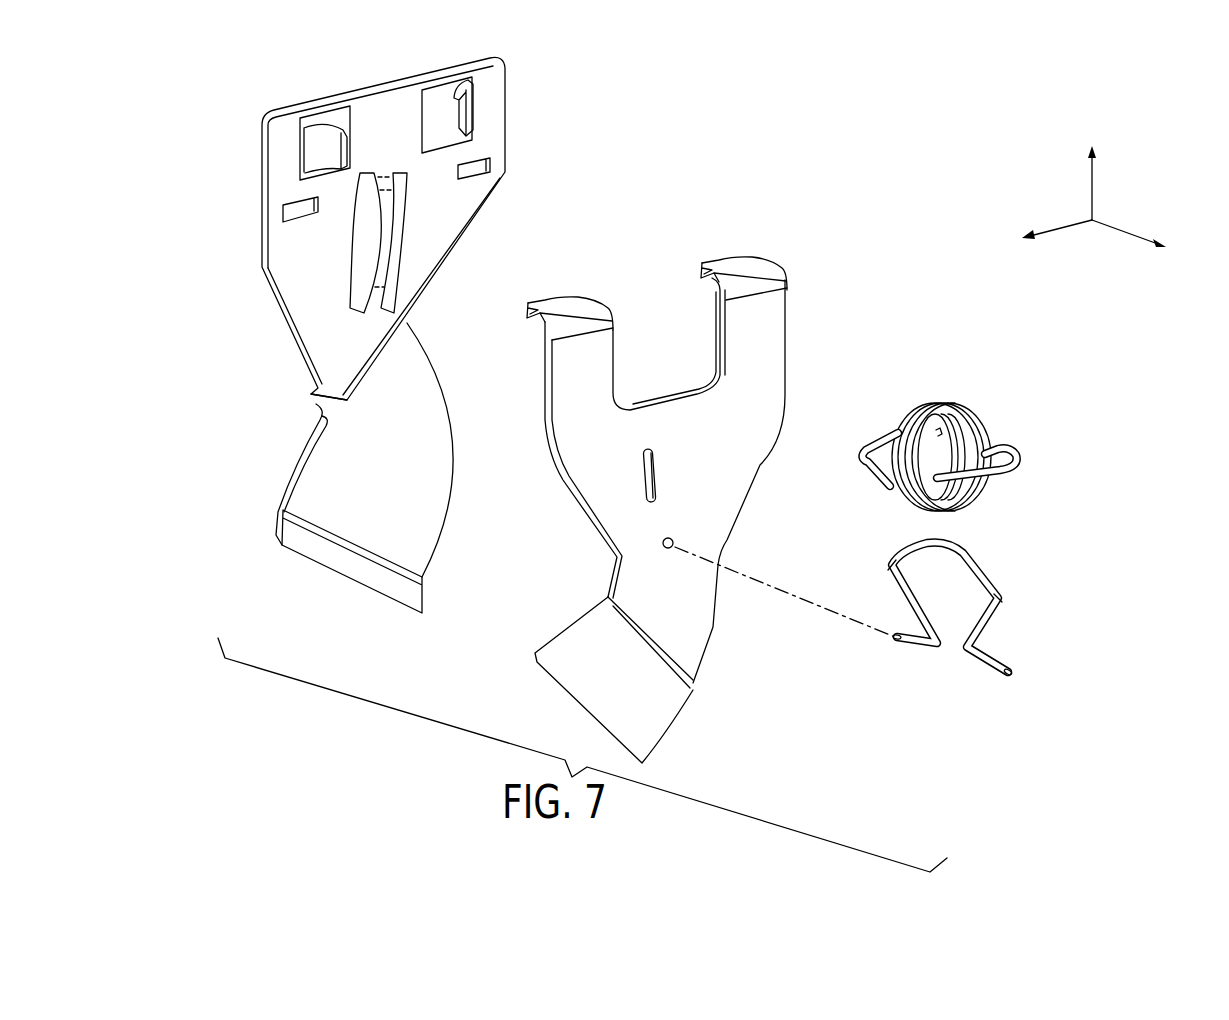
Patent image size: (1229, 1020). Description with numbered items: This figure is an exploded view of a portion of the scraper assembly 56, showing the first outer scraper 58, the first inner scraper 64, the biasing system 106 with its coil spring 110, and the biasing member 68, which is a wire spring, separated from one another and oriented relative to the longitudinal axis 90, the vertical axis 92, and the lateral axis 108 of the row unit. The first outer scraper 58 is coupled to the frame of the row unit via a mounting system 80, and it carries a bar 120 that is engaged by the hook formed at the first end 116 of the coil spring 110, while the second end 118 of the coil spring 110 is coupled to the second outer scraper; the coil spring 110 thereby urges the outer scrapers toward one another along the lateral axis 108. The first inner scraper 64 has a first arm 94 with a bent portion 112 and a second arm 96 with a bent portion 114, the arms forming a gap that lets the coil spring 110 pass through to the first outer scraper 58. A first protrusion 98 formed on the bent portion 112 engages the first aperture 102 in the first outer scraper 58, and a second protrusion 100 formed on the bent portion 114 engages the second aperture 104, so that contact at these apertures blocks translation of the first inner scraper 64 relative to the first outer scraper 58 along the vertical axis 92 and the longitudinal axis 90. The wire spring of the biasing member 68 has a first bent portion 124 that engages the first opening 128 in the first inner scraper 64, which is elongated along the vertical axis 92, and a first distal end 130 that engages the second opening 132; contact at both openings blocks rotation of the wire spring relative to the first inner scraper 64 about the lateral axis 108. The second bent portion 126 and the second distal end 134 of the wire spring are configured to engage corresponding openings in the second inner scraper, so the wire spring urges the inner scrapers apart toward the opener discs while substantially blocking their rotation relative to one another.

The scraper assembly 56 is at (662, 120).
The first outer scraper 58 is at (383, 77).
The first inner scraper 64 is at (716, 625).
The biasing member 68 is at (943, 546).
The mounting system 80 is at (224, 104).
The longitudinal axis 90 is at (1060, 226).
The vertical axis 92 is at (1094, 180).
The first arm 94 is at (779, 328).
The second arm 96 is at (562, 380).
The first protrusion 98 is at (727, 262).
The second protrusion 100 is at (543, 301).
The first aperture 102 is at (495, 167).
The second aperture 104 is at (283, 209).
The biasing system 106 is at (988, 385).
The lateral axis 108 is at (1125, 230).
The coil spring 110 is at (913, 402).
The bent portion 112 is at (710, 289).
The bent portion 114 is at (531, 319).
The first end 116 is at (861, 448).
The second end 118 is at (1019, 467).
The bar 120 is at (390, 240).
The first bent portion 124 is at (886, 571).
The second bent portion 126 is at (1002, 598).
The first opening 128 is at (659, 490).
The first distal end 130 is at (917, 653).
The second opening 132 is at (666, 536).
The second distal end 134 is at (988, 668).